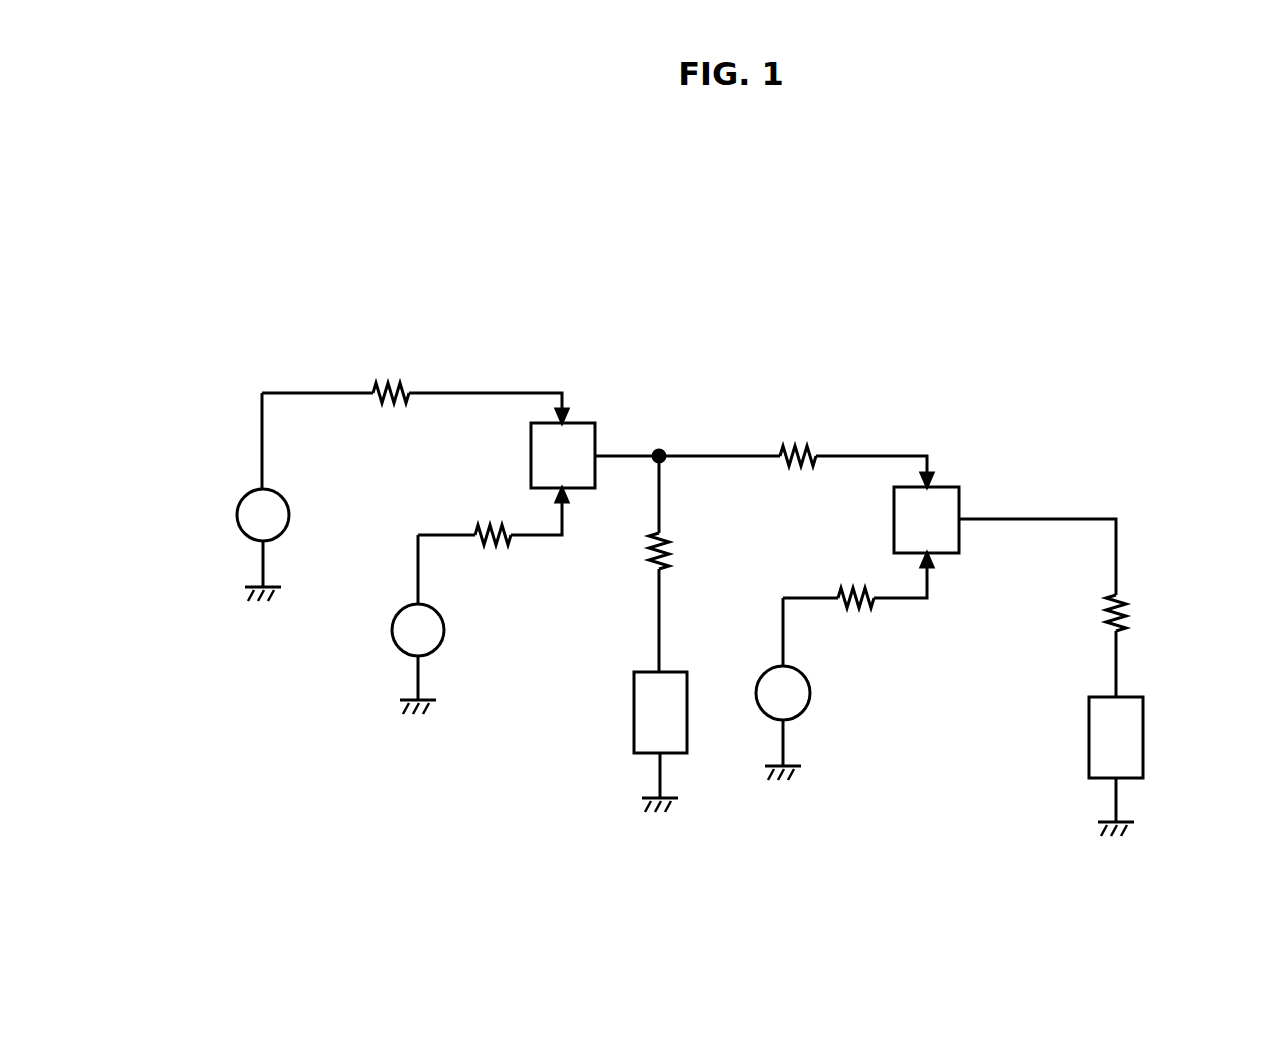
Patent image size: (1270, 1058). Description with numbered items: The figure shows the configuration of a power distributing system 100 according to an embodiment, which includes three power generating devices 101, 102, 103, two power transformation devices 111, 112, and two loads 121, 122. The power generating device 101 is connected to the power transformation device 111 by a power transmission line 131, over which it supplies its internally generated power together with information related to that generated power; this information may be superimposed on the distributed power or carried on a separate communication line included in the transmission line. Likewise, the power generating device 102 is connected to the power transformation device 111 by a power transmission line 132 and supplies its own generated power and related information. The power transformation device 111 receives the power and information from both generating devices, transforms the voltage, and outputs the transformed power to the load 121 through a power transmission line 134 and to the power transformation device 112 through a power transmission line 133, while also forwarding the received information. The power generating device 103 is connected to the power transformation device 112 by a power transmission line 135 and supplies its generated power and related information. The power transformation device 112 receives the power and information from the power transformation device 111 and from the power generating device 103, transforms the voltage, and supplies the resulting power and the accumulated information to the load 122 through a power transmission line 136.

The power distributing system 100 is at (1052, 308).
The power generating device 101 is at (237, 514).
The power generating device 102 is at (392, 629).
The power generating device 103 is at (810, 691).
The power transformation device 111 is at (531, 455).
The power transformation device 112 is at (894, 519).
The load 121 is at (634, 711).
The load 122 is at (1143, 737).
The power transmission line 131 is at (485, 393).
The power transmission line 132 is at (530, 537).
The power transmission line 133 is at (718, 456).
The power transmission line 134 is at (665, 508).
The power transmission line 135 is at (810, 597).
The power transmission line 136 is at (1120, 563).